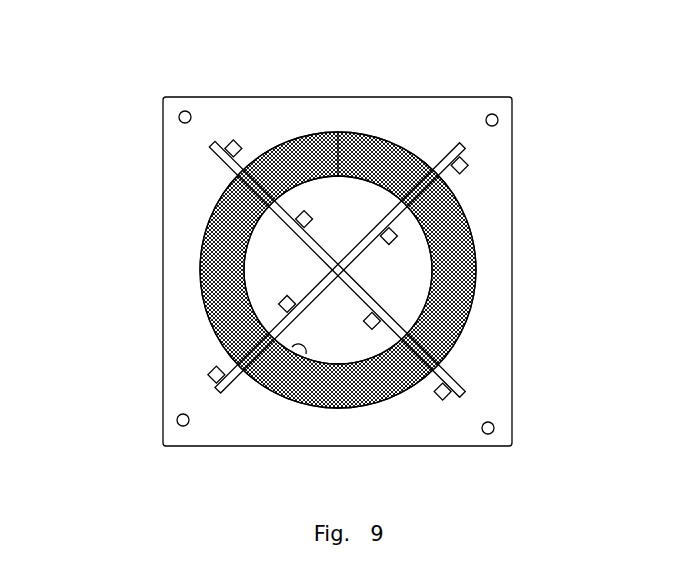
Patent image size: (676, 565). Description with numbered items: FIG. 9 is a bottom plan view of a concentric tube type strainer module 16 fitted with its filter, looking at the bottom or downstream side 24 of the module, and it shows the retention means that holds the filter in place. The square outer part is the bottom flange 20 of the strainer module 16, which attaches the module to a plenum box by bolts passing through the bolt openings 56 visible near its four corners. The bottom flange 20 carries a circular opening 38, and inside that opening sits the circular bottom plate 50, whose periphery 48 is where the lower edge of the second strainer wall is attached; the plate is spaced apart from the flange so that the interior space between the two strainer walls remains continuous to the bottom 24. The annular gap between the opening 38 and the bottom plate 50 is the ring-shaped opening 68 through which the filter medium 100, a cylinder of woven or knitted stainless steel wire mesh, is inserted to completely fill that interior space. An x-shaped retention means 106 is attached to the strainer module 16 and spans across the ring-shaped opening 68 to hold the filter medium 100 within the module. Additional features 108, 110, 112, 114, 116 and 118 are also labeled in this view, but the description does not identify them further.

The strainer module 16 is at (516, 126).
The bottom flange 20 is at (498, 226).
The bottom or downstream side 24 is at (410, 430).
The circular opening 38 is at (300, 352).
The periphery 48 is at (470, 326).
The circular bottom plate 50 is at (332, 350).
The bolt openings 56 is at (178, 117).
The ring-shaped opening 68 is at (343, 137).
The filter medium 100 is at (433, 252).
The x-shaped retention means 106 is at (236, 345).
The cushion ring 108 is at (418, 153).
The support arms 110 is at (220, 135).
The arm edges 112 is at (300, 283).
The clips 114 is at (238, 142).
The arm junction 116 is at (312, 263).
The arm ends 118 is at (212, 150).